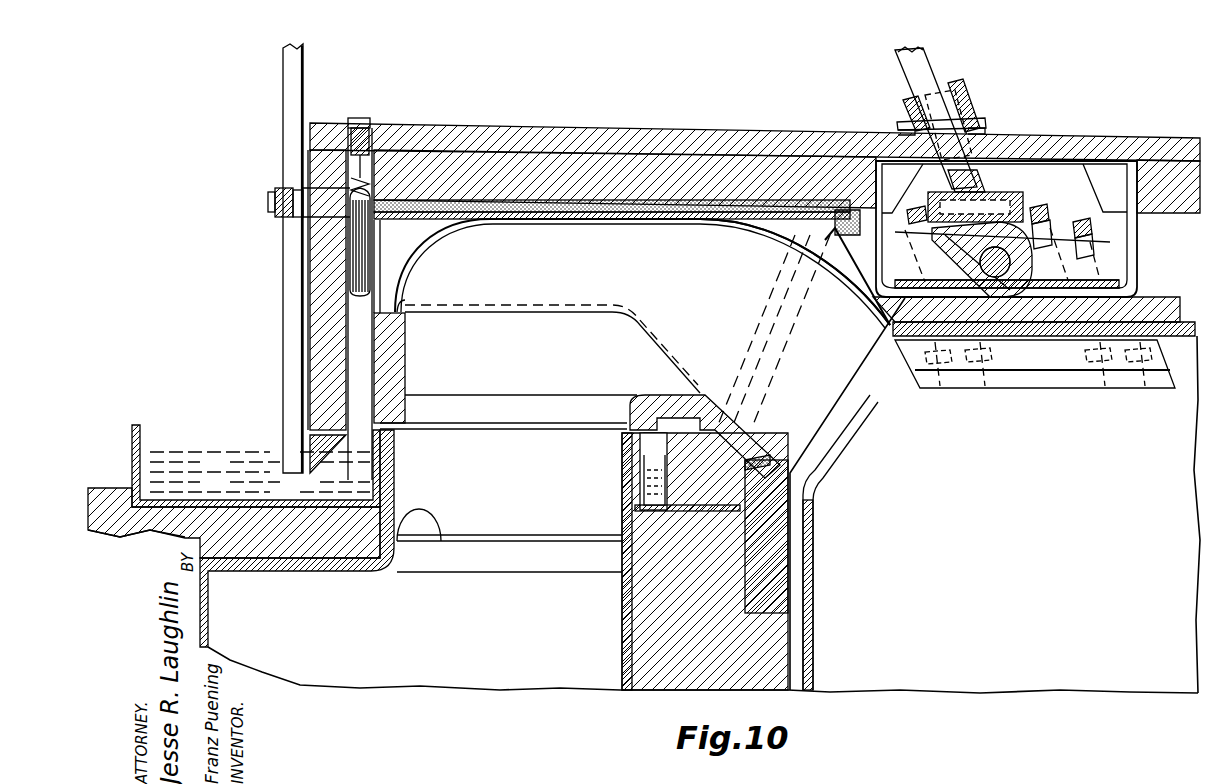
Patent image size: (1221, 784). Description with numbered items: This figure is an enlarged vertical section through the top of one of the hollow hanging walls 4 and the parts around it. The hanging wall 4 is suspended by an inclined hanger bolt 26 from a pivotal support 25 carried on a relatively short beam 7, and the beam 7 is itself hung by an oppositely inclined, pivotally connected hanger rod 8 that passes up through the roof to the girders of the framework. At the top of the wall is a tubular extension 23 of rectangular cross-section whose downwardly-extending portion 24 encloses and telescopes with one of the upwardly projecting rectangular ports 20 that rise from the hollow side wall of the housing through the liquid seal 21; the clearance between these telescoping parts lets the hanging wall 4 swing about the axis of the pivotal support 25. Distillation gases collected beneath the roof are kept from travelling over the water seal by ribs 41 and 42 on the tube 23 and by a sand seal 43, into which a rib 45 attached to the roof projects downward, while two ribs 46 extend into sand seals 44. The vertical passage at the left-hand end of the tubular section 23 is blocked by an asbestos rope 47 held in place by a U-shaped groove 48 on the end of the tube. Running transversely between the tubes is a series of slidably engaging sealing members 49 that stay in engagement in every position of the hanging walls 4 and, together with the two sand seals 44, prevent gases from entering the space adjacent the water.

The hanging wall 4 is at (1057, 685).
The beam 7 is at (1138, 248).
The hanger rod 8 is at (928, 72).
The port 20 is at (415, 522).
The liquid seal 21 is at (645, 487).
The tubular extension 23 is at (525, 245).
The downwardly-extending portion 24 is at (360, 392).
The pivotal support 25 is at (1008, 207).
The hanger bolt 26 is at (1120, 302).
The rib 41 is at (415, 245).
The rib 42 is at (792, 214).
The sand seal 43 is at (598, 205).
The sand seal 44 is at (820, 262).
The rib 45 is at (680, 192).
The rib 46 is at (848, 212).
The asbestos rope 47 is at (355, 215).
The U-shaped groove 48 is at (363, 330).
The sealing member 49 is at (752, 402).